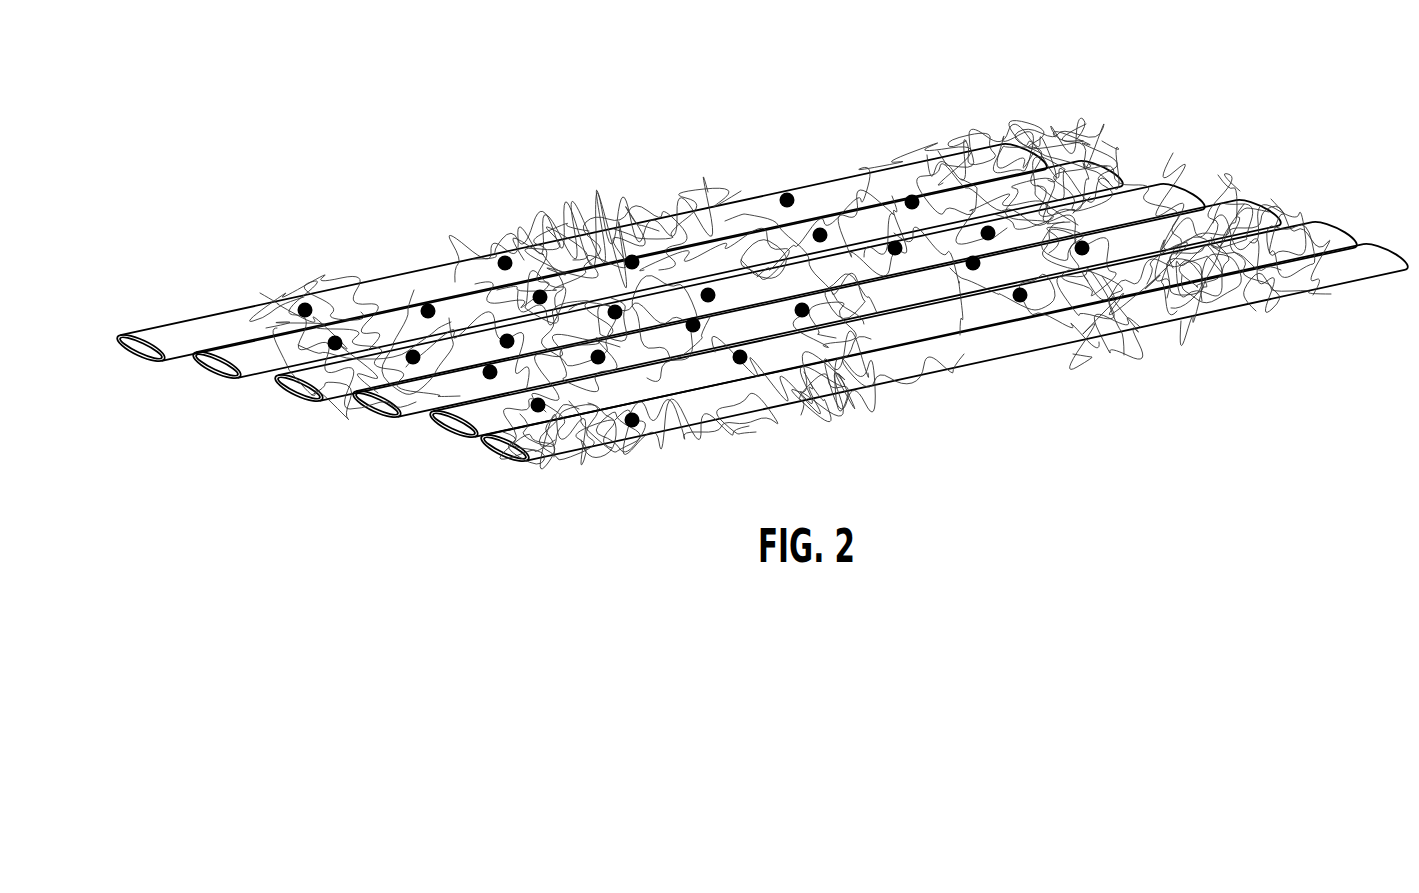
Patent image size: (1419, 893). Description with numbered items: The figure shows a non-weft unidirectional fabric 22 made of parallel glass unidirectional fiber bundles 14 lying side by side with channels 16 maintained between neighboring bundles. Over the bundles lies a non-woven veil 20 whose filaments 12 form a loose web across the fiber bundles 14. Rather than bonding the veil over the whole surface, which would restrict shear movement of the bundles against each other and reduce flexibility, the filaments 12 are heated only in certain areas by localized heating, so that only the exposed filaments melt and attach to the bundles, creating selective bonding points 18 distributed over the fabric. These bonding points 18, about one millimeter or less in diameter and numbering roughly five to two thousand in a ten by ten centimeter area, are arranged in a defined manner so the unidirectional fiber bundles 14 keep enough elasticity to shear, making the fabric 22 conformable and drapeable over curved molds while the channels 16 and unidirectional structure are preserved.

The filaments 12 is at (790, 293).
The unidirectional fiber bundles 14 is at (213, 325).
The channels 16 is at (244, 384).
The selective bonding points 18 is at (787, 193).
The non-woven veil 20 is at (1197, 183).
The non-weft unidirectional fabric 22 is at (710, 112).